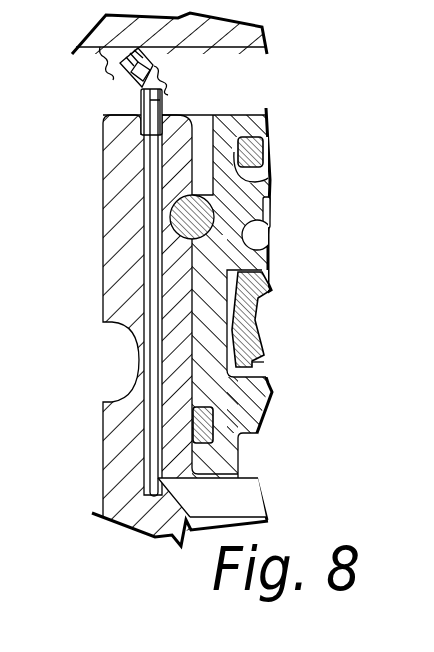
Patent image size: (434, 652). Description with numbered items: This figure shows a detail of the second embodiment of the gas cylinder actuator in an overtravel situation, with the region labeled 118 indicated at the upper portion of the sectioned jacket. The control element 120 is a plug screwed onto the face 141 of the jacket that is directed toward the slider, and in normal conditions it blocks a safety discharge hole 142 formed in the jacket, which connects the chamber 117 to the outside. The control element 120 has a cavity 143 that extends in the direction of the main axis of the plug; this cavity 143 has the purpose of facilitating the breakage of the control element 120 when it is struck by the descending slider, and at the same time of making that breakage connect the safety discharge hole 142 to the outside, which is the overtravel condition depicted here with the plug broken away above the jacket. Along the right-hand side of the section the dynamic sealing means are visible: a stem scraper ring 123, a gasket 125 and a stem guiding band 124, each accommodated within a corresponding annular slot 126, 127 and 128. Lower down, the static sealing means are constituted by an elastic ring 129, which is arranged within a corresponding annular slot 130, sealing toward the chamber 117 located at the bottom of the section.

The chamber 117 is at (248, 501).
The valve body 118 is at (229, 109).
The control element 120 is at (141, 96).
The stem scraper ring 123 is at (265, 147).
The stem guiding band 124 is at (270, 214).
The gasket 125 is at (260, 307).
The annular slot 126 is at (270, 181).
The annular slot 127 is at (265, 252).
The annular slot 128 is at (257, 376).
The elastic ring 129 is at (193, 413).
The annular slot 130 is at (200, 468).
The face 141 is at (140, 113).
The safety discharge hole 142 is at (153, 252).
The cavity 143 is at (162, 100).